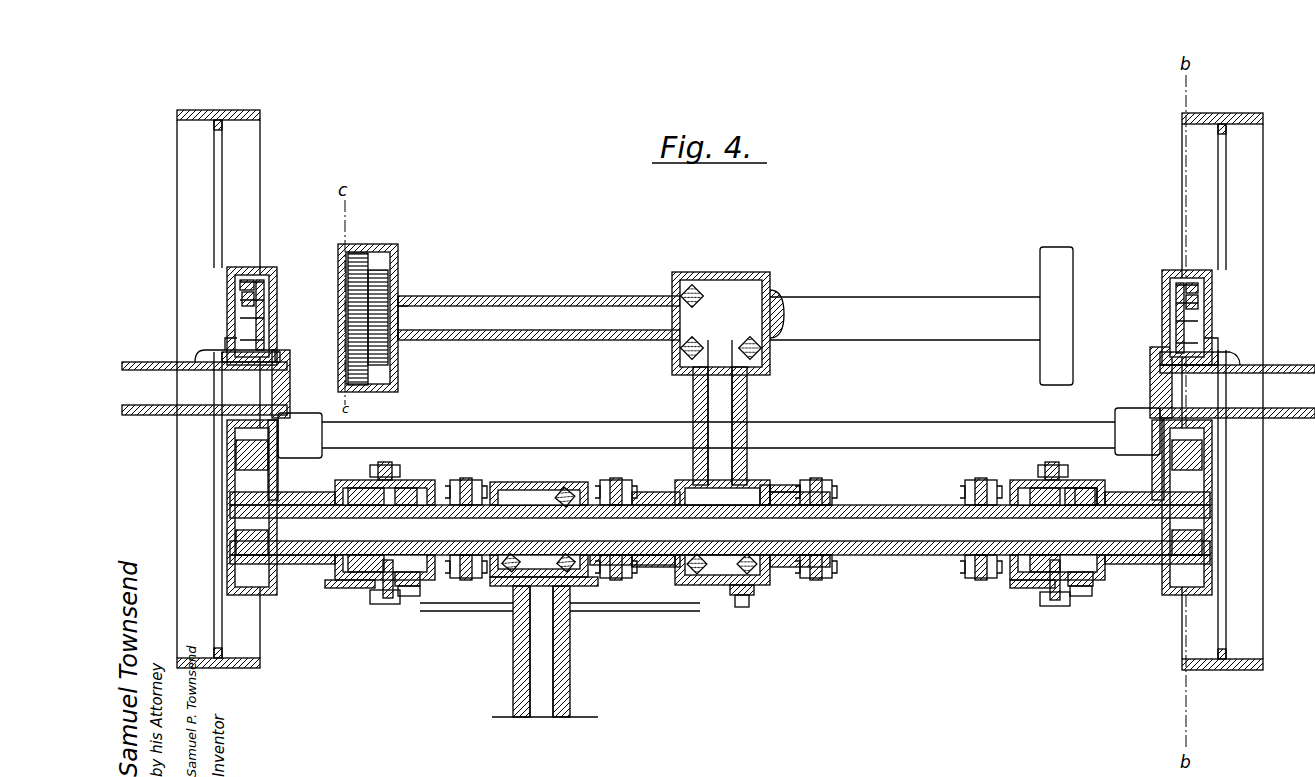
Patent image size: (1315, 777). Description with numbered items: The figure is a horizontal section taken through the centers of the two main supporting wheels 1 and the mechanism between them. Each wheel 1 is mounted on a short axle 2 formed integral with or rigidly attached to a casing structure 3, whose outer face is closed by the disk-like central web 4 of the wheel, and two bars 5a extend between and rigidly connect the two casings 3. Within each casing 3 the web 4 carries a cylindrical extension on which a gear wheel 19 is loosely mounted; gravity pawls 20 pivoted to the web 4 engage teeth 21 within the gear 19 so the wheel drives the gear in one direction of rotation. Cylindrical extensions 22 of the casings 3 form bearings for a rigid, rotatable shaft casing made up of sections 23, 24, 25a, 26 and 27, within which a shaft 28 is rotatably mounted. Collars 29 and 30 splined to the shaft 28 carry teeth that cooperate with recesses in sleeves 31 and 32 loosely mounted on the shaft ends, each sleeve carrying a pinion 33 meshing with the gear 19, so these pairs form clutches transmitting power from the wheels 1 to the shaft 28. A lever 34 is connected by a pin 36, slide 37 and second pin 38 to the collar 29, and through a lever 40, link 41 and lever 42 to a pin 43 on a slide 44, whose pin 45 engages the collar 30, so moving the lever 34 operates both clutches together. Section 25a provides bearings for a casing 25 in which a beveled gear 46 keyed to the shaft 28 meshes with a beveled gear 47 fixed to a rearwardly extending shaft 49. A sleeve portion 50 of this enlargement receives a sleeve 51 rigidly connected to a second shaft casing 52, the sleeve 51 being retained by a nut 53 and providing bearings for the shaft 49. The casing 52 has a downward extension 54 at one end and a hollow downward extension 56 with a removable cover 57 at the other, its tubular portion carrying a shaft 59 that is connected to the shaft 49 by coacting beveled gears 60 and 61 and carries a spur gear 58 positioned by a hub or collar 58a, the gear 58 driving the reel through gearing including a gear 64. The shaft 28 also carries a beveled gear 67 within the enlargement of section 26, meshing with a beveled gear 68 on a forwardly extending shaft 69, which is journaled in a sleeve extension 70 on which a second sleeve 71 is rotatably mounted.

The main supporting wheels 1 is at (248, 108).
The short axles 2 is at (718, 382).
The casing structures 3 is at (277, 330).
The disk-like central webs 4 is at (231, 321).
The bars 5a is at (444, 426).
The gear wheel 19 is at (270, 272).
The gravity pawls 20 is at (276, 348).
The teeth 21 is at (275, 304).
The cylindrical extensions 22 is at (301, 493).
The shaft casing section 23 is at (1038, 486).
The shaft casing section 24 is at (914, 506).
The casing 25 is at (784, 489).
The shaft casing section 25a is at (649, 495).
The shaft casing section 26 is at (601, 492).
The shaft casing section 27 is at (396, 482).
The shaft 28 is at (308, 564).
The collar 29 is at (1012, 484).
The collar 30 is at (426, 489).
The sleeve 31 is at (1080, 488).
The sleeve 32 is at (350, 585).
The pinion 33 is at (238, 567).
The lever 34 is at (1092, 598).
The pin 36 is at (1064, 612).
The slide 37 is at (1029, 598).
The pin 38 is at (1013, 590).
The lever 40 is at (754, 596).
The link 41 is at (472, 611).
The lever 42 is at (387, 606).
The pin 43 is at (383, 595).
The slide 44 is at (330, 586).
The pin 45 is at (423, 600).
The beveled gear 46 is at (672, 567).
The beveled gear 47 is at (743, 520).
The rearwardly extending shaft 49 is at (730, 390).
The sleeve portion 50 is at (693, 400).
The sleeve 51 is at (694, 464).
The shaft casing 52 is at (744, 272).
The nut 53 is at (766, 482).
The downward extension 54 is at (1070, 284).
The downward extension 56 is at (398, 268).
The removable cover 57 is at (340, 285).
The spur gear 58 is at (362, 254).
The hub or collar 58a is at (400, 298).
The shaft 59 is at (552, 295).
The beveled gear 60 is at (692, 276).
The beveled gear 61 is at (760, 348).
The gear 64 is at (388, 354).
The beveled gear 67 is at (568, 490).
The beveled gear 68 is at (508, 584).
The forwardly extending shaft 69 is at (545, 640).
The sleeve extension 70 is at (515, 670).
The sleeve 71 is at (570, 678).